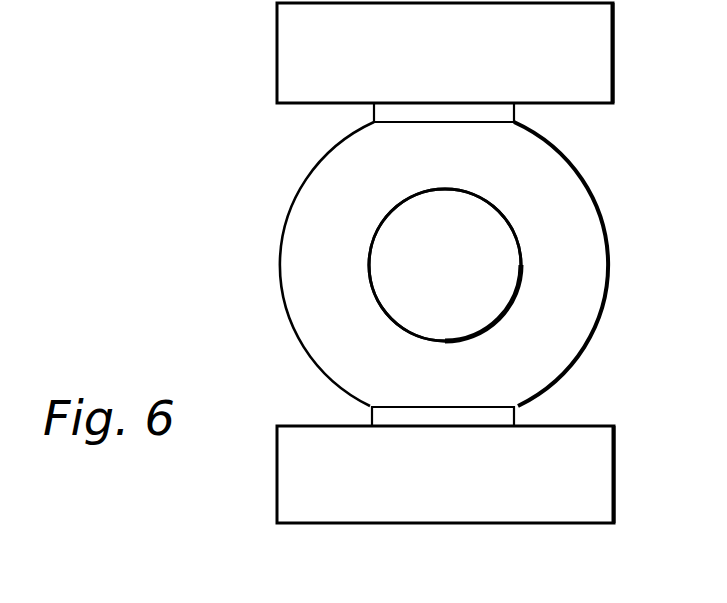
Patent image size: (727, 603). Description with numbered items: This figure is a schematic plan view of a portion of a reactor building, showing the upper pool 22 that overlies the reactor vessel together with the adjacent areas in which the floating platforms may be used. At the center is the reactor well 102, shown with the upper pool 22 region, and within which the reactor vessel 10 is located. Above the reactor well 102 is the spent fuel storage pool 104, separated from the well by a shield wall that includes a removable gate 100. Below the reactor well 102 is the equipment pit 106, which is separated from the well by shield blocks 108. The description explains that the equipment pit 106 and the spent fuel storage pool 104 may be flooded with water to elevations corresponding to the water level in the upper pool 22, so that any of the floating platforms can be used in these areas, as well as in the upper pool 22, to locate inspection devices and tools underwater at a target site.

The cable 10 is at (516, 300).
The upper pool 22 is at (462, 270).
The removable gate 100 is at (372, 112).
The reactor well 102 is at (298, 254).
The spent fuel storage pool 104 is at (472, 60).
The equipment pit 106 is at (472, 486).
The shield blocks 108 is at (518, 411).